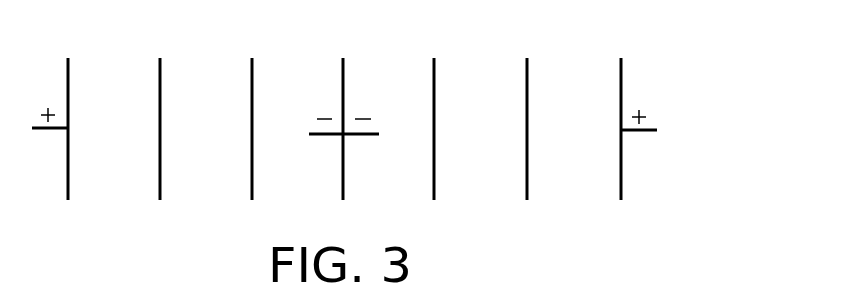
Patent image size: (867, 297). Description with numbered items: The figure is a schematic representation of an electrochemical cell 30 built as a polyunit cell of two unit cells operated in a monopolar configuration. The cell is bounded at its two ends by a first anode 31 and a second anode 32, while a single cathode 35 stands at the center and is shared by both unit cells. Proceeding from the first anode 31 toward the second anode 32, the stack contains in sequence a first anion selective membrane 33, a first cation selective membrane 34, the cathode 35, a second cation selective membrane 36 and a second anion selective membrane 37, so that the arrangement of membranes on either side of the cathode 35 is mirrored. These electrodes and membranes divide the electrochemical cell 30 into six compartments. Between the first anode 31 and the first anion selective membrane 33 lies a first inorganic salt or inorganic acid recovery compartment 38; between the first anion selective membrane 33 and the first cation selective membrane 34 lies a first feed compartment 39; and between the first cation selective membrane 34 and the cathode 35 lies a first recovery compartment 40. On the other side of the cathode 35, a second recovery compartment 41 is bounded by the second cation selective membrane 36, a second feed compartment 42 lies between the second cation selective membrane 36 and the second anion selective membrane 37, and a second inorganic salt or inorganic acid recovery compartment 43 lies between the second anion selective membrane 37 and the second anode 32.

The electrochemical cell 30 is at (688, 77).
The first anode 31 is at (53, 116).
The second anode 32 is at (633, 116).
The first anion selective membrane 33 is at (159, 132).
The first cation selective membrane 34 is at (251, 132).
The cathode 35 is at (344, 116).
The second cation selective membrane 36 is at (433, 132).
The second anion selective membrane 37 is at (525, 132).
The first inorganic salt or inorganic acid recovery compartment 38 is at (112, 190).
The first feed compartment 39 is at (207, 190).
The first recovery compartment 40 is at (292, 190).
The second recovery compartment 41 is at (383, 190).
The second feed compartment 42 is at (477, 190).
The second inorganic salt or inorganic acid recovery compartment 43 is at (573, 190).